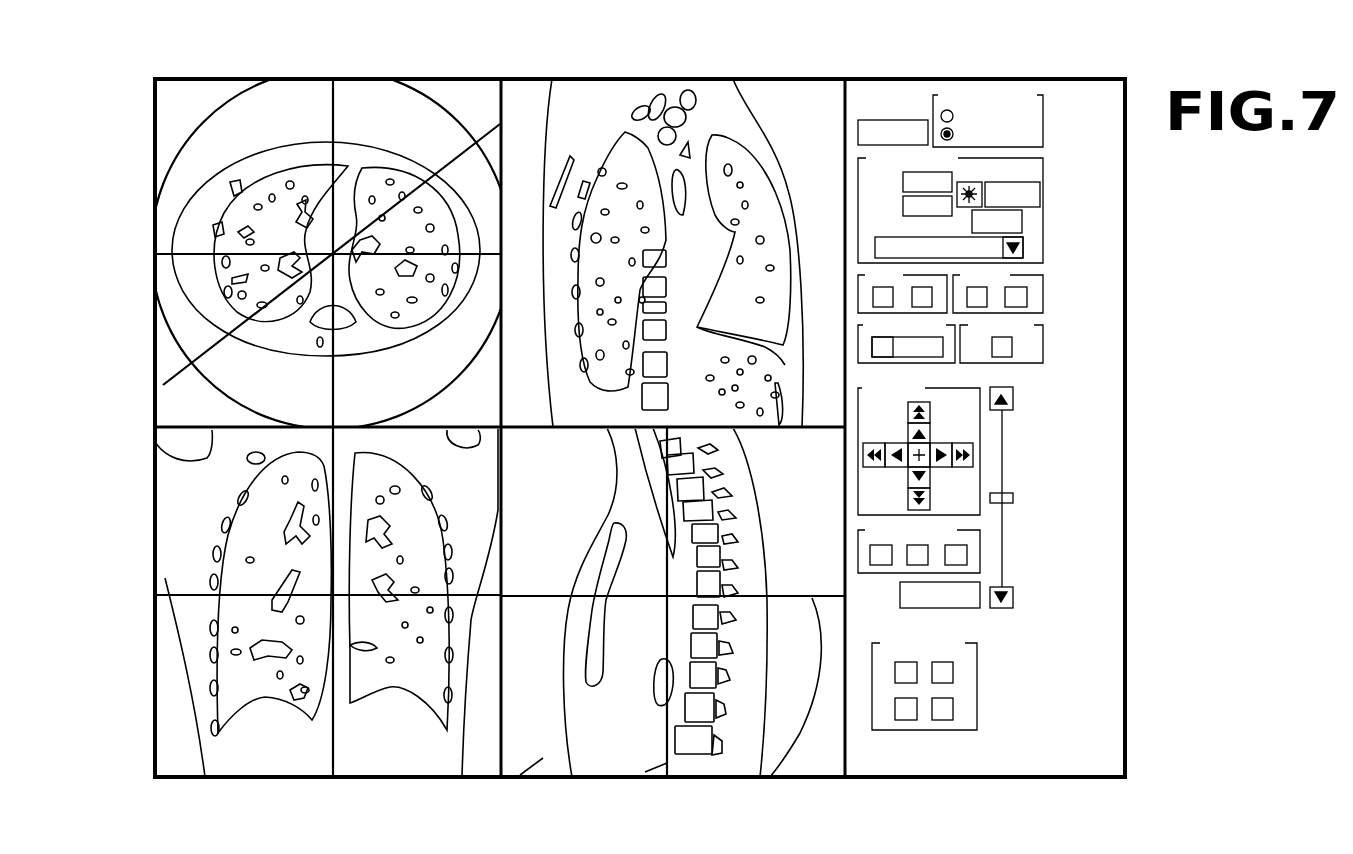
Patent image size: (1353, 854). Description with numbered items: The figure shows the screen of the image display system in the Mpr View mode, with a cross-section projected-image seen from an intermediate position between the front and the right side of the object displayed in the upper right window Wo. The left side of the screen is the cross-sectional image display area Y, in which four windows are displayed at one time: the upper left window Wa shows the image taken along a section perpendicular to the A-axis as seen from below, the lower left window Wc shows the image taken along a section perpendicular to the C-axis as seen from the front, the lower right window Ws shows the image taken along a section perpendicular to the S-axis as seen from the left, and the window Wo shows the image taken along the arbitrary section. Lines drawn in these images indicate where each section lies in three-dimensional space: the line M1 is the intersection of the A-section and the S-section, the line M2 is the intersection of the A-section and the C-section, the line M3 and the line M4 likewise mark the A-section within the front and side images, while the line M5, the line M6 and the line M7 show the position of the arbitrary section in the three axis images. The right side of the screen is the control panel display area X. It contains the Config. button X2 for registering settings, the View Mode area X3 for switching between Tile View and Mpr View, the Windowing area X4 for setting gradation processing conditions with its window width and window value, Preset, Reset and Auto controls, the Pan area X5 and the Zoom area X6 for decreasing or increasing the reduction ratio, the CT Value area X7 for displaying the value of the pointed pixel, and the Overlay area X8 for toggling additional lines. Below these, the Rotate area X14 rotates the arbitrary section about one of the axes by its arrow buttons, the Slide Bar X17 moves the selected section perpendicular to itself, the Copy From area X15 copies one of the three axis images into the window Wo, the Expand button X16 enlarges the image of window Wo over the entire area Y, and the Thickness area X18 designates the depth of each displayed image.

The upper left window Wa is at (180, 88).
The upper right window Wo is at (525, 88).
The lower left window Wc is at (185, 757).
The lower right window Ws is at (540, 760).
The cross-sectional image display area Y is at (815, 77).
The control panel display area X is at (1067, 78).
The Config. button X2 is at (893, 118).
The View Mode area X3 is at (1047, 128).
The Windowing area X4 is at (1045, 200).
The Pan area X5 is at (930, 277).
The Zoom area X6 is at (1045, 305).
The CT Value area X7 is at (955, 365).
The Overlay area X8 is at (1045, 350).
The Rotate area X14 is at (968, 386).
The Copy From area X15 is at (892, 572).
The Expand button X16 is at (965, 608).
The Slide Bar X17 is at (1023, 613).
The Thickness area X18 is at (968, 700).
The line M1 is at (335, 103).
The line M2 is at (176, 268).
The line M3 is at (176, 602).
The line M4 is at (787, 745).
The line M5 is at (178, 363).
The line M6 is at (328, 757).
The line M7 is at (665, 758).